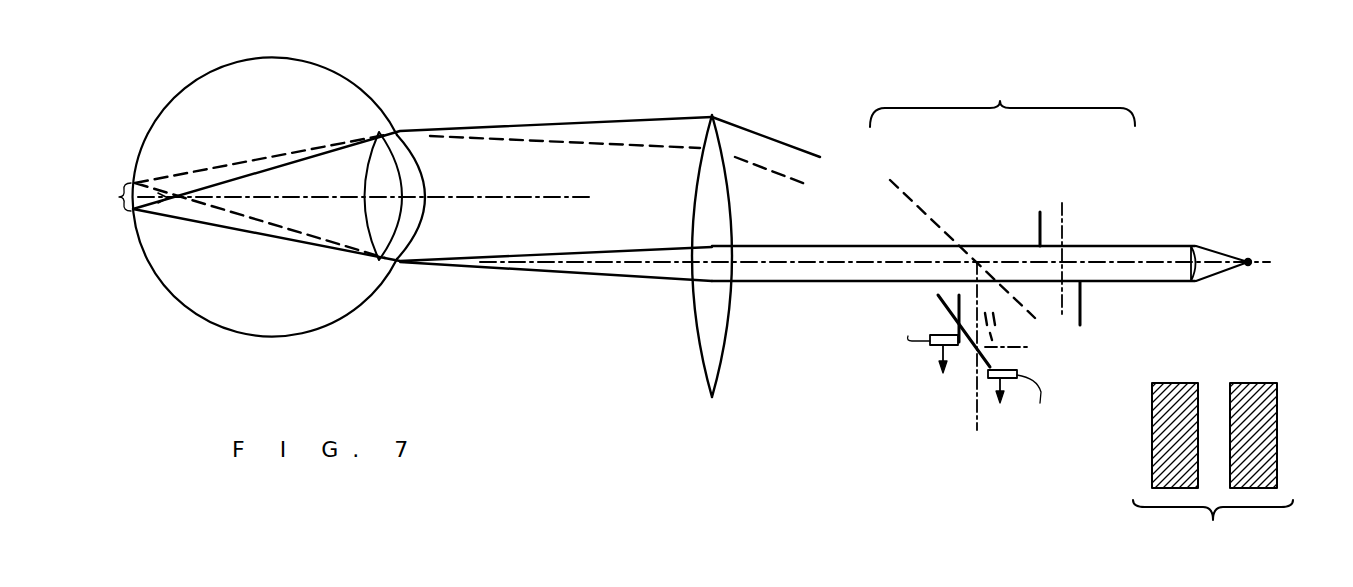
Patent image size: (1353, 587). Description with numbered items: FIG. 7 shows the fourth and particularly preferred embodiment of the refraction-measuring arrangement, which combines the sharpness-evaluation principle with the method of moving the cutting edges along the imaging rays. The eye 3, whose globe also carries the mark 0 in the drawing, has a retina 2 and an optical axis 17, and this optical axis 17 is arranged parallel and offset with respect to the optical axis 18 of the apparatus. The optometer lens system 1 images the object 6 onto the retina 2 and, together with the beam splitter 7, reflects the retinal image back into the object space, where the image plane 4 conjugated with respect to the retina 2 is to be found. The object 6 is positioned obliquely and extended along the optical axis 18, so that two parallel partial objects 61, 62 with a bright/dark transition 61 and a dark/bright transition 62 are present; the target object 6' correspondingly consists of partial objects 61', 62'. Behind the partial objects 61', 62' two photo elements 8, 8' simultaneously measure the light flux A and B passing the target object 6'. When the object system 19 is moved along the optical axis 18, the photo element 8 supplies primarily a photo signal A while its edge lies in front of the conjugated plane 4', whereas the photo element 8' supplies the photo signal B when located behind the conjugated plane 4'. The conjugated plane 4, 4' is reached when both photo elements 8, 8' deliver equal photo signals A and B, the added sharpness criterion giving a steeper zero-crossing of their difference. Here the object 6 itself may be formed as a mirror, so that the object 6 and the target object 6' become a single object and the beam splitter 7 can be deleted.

The eye 0 is at (360, 87).
The optometer lens system 1 is at (705, 120).
The retina 2 is at (116, 199).
The eye 3 is at (141, 147).
The optical axis of the eye 17 is at (522, 197).
The optical axis of the apparatus 18 is at (1272, 262).
The object system 19 is at (1002, 103).
The beam splitter 7 is at (934, 224).
The image plane 4 is at (1078, 250).
The object 6 is at (1075, 287).
The partial object 61 is at (1103, 343).
The partial object 62 is at (1188, 404).
The target object 6' is at (954, 380).
The partial object of target object 61' is at (945, 370).
The partial object of target object 62' is at (1002, 432).
The conjugated plane 4' is at (1029, 359).
The photo element 8 is at (926, 355).
The photo element 8' is at (1023, 401).
The photo signal A is at (942, 352).
The photo signal B is at (1005, 392).